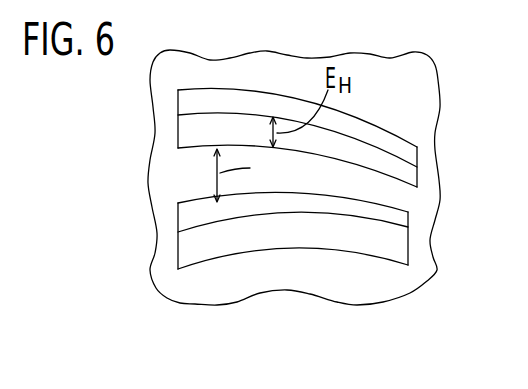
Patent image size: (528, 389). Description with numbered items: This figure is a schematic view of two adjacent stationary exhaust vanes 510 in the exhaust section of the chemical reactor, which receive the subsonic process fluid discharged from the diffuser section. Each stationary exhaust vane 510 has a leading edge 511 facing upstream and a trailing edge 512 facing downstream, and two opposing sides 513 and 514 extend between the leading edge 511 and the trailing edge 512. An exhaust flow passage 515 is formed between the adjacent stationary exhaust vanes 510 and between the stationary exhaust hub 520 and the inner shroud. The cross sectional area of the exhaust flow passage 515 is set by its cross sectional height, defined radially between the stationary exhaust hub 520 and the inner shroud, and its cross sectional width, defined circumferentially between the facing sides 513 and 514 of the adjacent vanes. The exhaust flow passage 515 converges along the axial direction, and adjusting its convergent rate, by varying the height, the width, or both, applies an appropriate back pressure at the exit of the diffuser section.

The stationary exhaust vane 510 is at (286, 180).
The leading edge 511 is at (178, 133).
The trailing edge 512 is at (409, 173).
The side 513 is at (270, 91).
The side 514 is at (227, 130).
The exhaust flow passage 515 is at (181, 173).
The stationary exhaust hub 520 is at (333, 180).